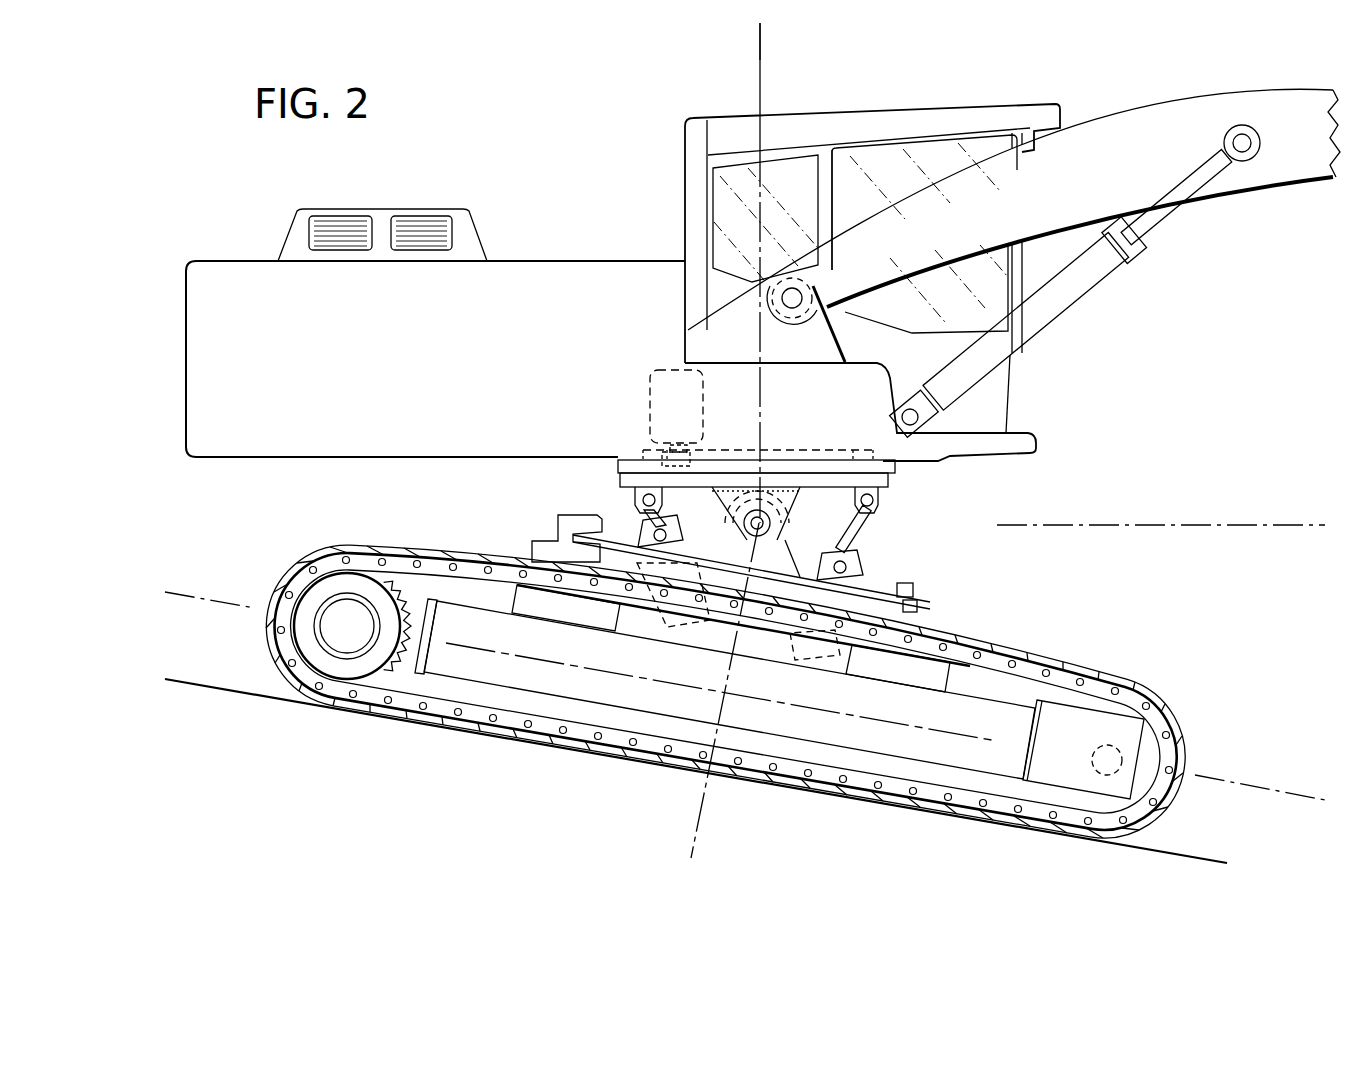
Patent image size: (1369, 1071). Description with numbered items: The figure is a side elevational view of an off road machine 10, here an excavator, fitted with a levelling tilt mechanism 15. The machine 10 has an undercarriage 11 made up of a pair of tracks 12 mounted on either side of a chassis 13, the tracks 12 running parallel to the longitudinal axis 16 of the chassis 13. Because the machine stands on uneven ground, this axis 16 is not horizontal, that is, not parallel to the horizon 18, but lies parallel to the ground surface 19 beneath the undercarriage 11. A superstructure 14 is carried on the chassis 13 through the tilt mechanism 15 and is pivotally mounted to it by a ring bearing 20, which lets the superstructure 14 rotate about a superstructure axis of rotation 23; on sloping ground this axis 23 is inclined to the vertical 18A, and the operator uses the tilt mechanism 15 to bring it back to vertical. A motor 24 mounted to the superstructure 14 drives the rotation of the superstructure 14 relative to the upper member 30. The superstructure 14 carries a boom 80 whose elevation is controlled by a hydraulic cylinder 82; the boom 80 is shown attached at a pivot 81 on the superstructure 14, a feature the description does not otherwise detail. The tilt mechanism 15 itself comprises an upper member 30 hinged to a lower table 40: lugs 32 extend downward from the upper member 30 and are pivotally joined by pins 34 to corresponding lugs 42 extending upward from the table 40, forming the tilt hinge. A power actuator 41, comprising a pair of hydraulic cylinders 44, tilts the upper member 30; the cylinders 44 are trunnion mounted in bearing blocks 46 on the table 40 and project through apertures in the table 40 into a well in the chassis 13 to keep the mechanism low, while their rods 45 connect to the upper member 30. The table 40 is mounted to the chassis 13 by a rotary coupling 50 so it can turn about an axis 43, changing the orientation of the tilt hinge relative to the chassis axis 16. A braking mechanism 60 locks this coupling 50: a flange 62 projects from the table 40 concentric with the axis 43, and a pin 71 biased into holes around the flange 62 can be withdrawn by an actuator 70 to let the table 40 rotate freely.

The off road machine 10 is at (558, 170).
The undercarriage 11 is at (1055, 610).
The tracks 12 is at (1048, 655).
The chassis 13 is at (478, 595).
The superstructure 14 is at (1030, 392).
The tilt mechanism 15 is at (950, 518).
The longitudinal axis 16 is at (216, 588).
The horizon 18 is at (1192, 520).
The vertical 18A is at (768, 67).
The ground surface 19 is at (222, 672).
The ring bearing 20 is at (633, 452).
The superstructure axis of rotation 23 is at (758, 90).
The motor 24 is at (648, 375).
The upper member 30 is at (895, 483).
The lugs 32 is at (797, 495).
The pins 34 is at (775, 528).
The table 40 is at (915, 582).
The power actuator 41 is at (633, 513).
The lugs 42 is at (730, 520).
The axis 43 is at (695, 793).
The hydraulic cylinders 44 is at (836, 665).
The rods 45 is at (880, 528).
The bearing blocks 46 is at (862, 540).
The rotary coupling 50 is at (595, 592).
The braking mechanism 60 is at (555, 522).
The flange 62 is at (925, 596).
The actuator 70 is at (925, 610).
The pin 71 is at (925, 590).
The boom 80 is at (1253, 182).
The boom pivot 81 is at (800, 290).
The hydraulic cylinder 82 is at (1082, 287).